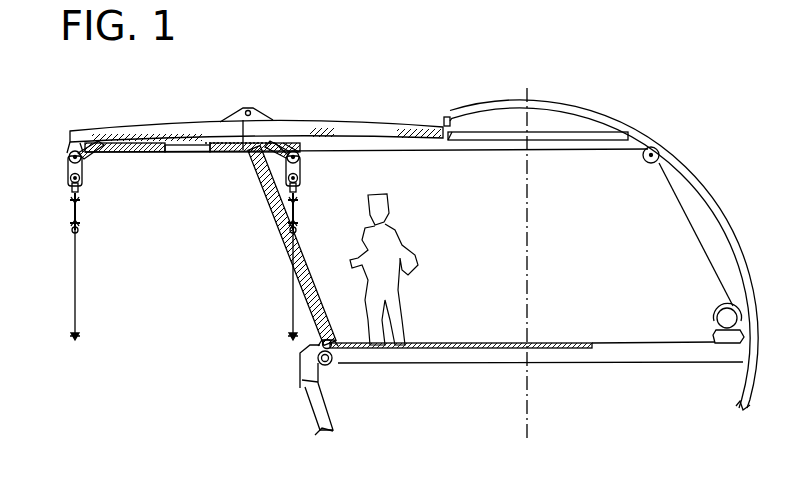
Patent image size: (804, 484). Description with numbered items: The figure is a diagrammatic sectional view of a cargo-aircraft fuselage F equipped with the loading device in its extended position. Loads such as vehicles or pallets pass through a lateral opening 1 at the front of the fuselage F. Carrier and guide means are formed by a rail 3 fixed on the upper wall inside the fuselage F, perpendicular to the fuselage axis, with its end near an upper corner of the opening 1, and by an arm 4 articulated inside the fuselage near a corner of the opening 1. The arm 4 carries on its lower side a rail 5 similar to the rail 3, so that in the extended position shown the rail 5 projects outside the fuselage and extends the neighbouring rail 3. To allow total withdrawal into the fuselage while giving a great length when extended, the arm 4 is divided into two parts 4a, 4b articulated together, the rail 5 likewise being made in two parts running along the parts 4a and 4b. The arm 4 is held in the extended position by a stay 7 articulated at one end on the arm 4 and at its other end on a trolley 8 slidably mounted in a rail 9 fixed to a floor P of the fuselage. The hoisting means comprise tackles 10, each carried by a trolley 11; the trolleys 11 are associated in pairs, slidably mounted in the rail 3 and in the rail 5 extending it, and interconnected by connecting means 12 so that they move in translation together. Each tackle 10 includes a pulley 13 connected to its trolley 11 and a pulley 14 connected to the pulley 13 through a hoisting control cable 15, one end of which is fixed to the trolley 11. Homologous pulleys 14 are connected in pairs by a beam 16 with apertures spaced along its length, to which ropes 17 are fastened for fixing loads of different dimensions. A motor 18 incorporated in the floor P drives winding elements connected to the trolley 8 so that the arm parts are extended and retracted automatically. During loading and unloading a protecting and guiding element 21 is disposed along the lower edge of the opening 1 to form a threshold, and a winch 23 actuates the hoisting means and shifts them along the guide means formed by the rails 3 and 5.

The lateral opening 1 is at (445, 117).
The rail 3 is at (563, 142).
The arm 4 is at (308, 119).
The arm part 4a is at (360, 130).
The arm part 4b is at (128, 132).
The rail 5 is at (415, 141).
The stay 7 is at (311, 282).
The trolley 8 is at (334, 341).
The rail 9 is at (466, 345).
The tackle 10 is at (66, 179).
The trolley 11 is at (138, 146).
The connecting means 12 is at (188, 148).
The pulley 13 is at (68, 160).
The pulley 14 is at (80, 184).
The hoisting control cable 15 is at (82, 176).
The beam 16 is at (70, 214).
The rope 17 is at (72, 277).
The motor 18 is at (330, 366).
The protecting and guiding element 21 is at (300, 364).
The winch 23 is at (716, 316).
The fuselage F is at (732, 229).
The floor P is at (630, 360).